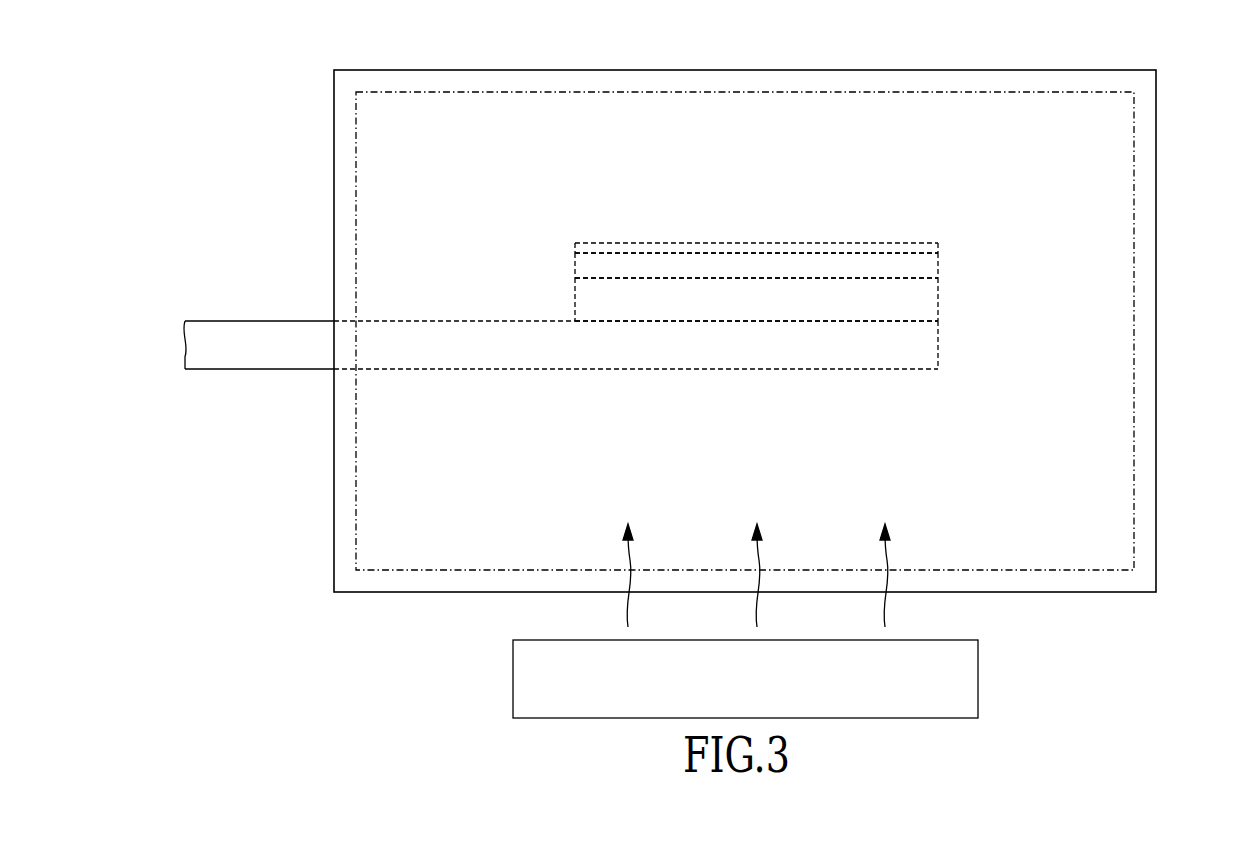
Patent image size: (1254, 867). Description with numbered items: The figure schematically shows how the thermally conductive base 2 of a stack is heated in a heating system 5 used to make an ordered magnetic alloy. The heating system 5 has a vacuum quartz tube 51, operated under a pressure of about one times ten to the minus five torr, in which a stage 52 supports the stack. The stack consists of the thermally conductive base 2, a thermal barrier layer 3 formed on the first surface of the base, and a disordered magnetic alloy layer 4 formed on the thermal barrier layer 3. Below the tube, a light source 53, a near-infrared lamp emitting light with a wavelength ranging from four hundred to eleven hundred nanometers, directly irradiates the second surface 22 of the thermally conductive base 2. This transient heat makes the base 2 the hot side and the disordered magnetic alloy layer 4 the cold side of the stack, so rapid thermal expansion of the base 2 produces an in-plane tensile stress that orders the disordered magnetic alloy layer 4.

The heating system 5 is at (719, 377).
The vacuum quartz tube 51 is at (1145, 180).
The stage 52 is at (416, 369).
The light source 53 is at (978, 678).
The thermally conductive base 2 is at (898, 297).
The second surface 22 is at (880, 320).
The thermal barrier layer 3 is at (908, 265).
The disordered magnetic alloy layer 4 is at (920, 248).